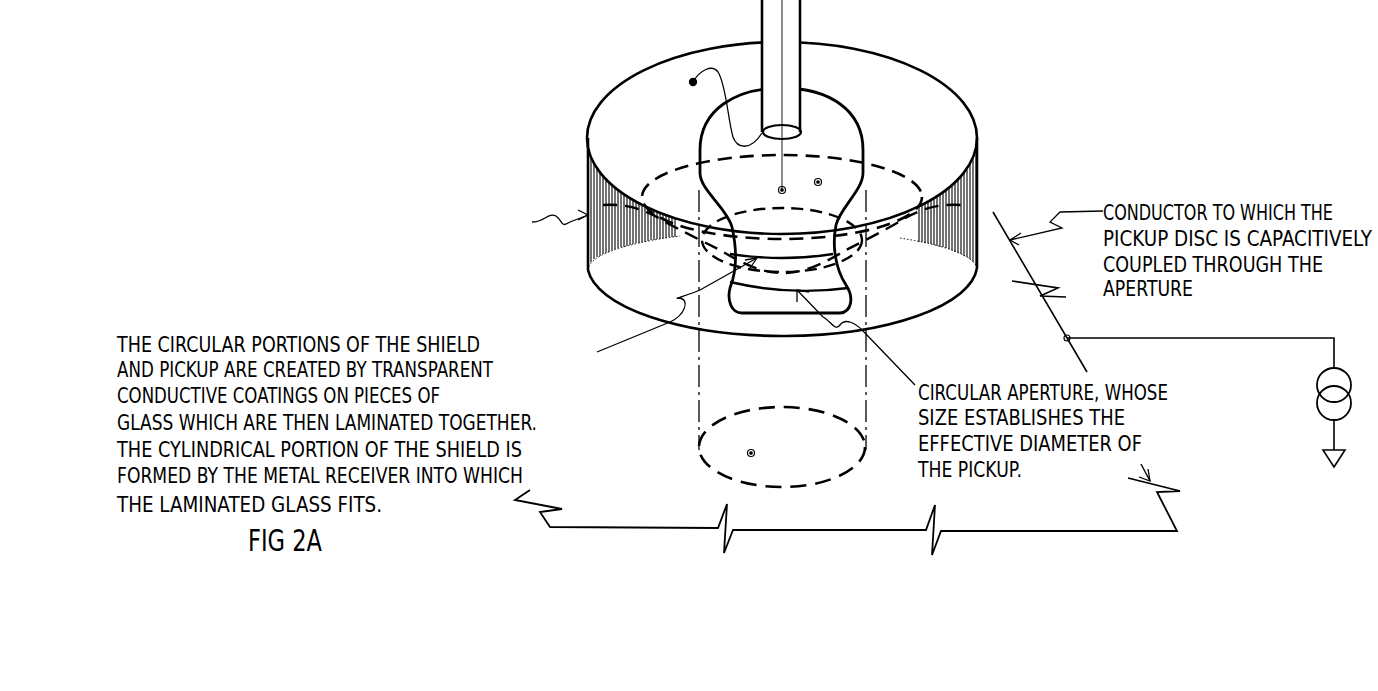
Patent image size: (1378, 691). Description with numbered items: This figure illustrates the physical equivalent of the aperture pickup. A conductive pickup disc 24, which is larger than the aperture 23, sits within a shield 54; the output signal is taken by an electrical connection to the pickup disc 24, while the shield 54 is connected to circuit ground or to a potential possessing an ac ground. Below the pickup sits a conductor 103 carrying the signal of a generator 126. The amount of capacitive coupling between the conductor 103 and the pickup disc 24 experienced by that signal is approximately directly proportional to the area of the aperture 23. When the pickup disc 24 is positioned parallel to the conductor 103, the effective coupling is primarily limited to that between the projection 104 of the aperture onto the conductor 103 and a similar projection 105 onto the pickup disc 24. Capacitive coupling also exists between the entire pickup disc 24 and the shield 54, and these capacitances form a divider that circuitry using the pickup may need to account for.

The shield 54 is at (978, 128).
The pickup disc 24 is at (663, 152).
The projection of the aperture onto the pickup disc 105 is at (818, 182).
The aperture 23 is at (760, 315).
The projection of the aperture onto the conductor 104 is at (751, 453).
The conductor 103 is at (1168, 503).
The generator 126 is at (1316, 402).